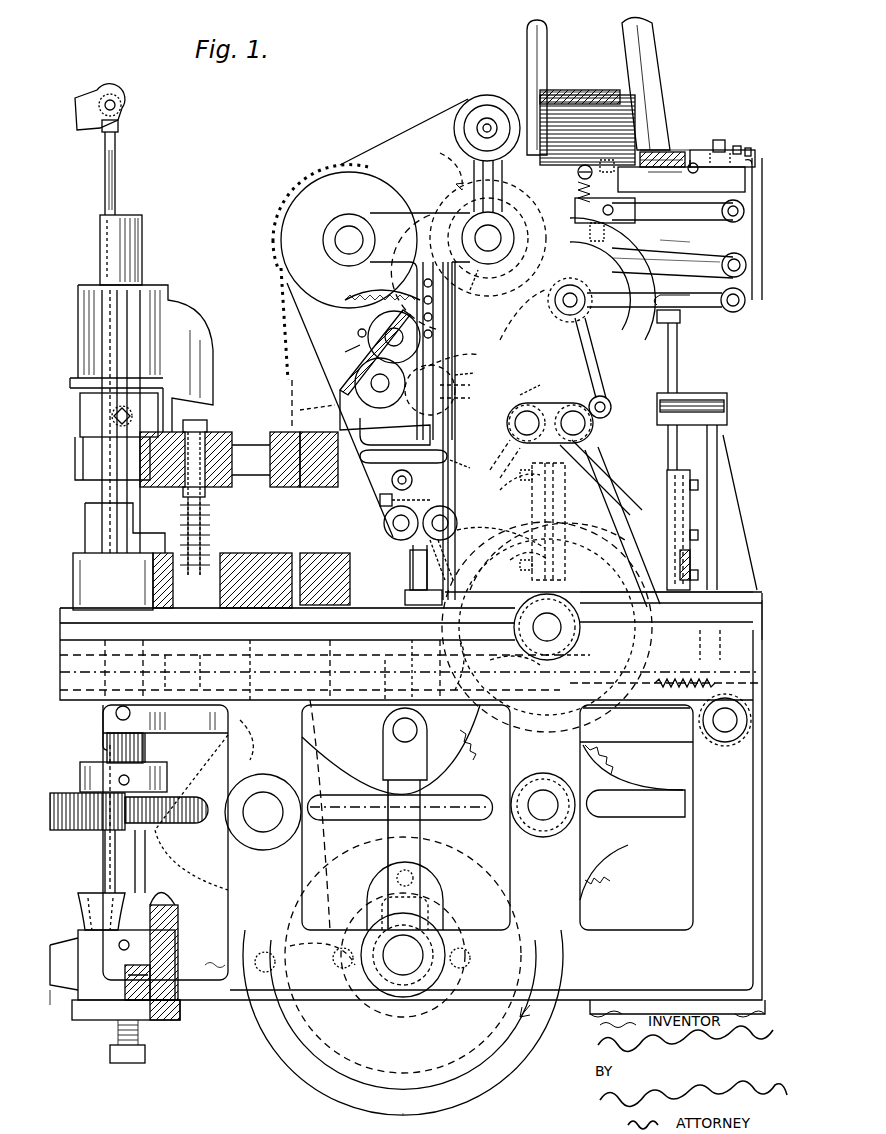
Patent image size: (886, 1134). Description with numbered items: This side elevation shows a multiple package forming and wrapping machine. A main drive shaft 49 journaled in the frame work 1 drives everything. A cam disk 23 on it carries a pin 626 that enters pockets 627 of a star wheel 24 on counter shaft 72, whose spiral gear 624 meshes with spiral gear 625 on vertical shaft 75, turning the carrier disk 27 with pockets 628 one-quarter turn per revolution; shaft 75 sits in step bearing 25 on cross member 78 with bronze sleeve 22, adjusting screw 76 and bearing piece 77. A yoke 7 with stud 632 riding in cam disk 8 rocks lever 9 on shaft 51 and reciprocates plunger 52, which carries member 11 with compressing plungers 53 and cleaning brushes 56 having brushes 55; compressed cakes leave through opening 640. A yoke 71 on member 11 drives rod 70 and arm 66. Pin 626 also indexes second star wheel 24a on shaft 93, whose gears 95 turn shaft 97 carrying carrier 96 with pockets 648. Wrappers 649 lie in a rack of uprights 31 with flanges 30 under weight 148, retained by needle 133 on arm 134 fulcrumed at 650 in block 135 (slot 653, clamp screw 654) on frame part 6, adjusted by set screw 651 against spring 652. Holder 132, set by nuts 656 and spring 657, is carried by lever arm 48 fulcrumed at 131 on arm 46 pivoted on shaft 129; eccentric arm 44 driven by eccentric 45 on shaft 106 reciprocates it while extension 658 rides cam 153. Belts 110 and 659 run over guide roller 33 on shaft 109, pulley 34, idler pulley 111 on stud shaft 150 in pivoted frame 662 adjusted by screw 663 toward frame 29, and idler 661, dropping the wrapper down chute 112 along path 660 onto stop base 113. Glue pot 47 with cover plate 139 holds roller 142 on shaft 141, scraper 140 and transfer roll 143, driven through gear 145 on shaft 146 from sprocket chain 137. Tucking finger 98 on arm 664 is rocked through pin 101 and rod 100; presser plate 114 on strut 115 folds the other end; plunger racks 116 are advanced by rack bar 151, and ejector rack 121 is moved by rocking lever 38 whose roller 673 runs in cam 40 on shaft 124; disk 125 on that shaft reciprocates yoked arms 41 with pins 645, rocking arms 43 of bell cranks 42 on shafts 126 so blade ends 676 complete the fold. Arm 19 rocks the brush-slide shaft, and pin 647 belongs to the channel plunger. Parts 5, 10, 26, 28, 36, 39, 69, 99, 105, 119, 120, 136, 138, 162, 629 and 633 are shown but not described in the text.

The frame 1 is at (740, 838).
The top rail 5 is at (765, 607).
The bracket 6 is at (762, 177).
The pawl stem 7 is at (422, 772).
The wheel 8 is at (320, 1090).
The bracket 9 is at (190, 735).
The bracket 10 is at (168, 290).
The housing 11 is at (80, 468).
The base 19 is at (137, 1001).
The funnel 22 is at (172, 895).
The wheel 23 is at (258, 1025).
The gear segment 24 is at (317, 817).
The gear segment 24a is at (632, 845).
The bearing block 25 is at (180, 920).
The slide 26 is at (169, 672).
The block 27 is at (301, 568).
The slide 28 is at (211, 672).
The lever 29 is at (748, 215).
The plate 30 is at (548, 60).
The blade 31 is at (655, 65).
The pulley 33 is at (490, 96).
The sprocket wheel 34 is at (332, 176).
The lever 36 is at (660, 490).
The rod 38 is at (680, 360).
The frame part 39 is at (723, 647).
The arc 40 is at (650, 345).
The rod 41 is at (625, 378).
The lever 42 is at (615, 470).
The pivot 43 is at (612, 400).
The pivot 44 is at (748, 262).
The arc 45 is at (502, 315).
The lever 46 is at (735, 240).
The bracket 47 is at (338, 395).
The lever 48 is at (672, 254).
The hub 49 is at (403, 955).
The boss 51 is at (722, 725).
The cylinder 52 is at (143, 232).
The nut 53 is at (212, 500).
The brush 55 is at (212, 525).
The bolt 56 is at (207, 425).
The cam bracket 66 is at (125, 105).
The rod 69 is at (125, 173).
The rod 70 is at (116, 185).
The block 71 is at (100, 410).
The boss 72 is at (263, 812).
The shaft 75 is at (115, 862).
The nut 76 is at (146, 1055).
The bushing 77 is at (142, 982).
The base plate 78 is at (185, 1012).
The boss 93 is at (543, 805).
The gear 95 is at (567, 656).
The rod 96 is at (665, 684).
The boss 97 is at (547, 627).
The rod 98 is at (430, 670).
The link 99 is at (587, 651).
The slide bar 100 is at (397, 670).
The link 101 is at (515, 665).
The cam 105 is at (470, 950).
The pulley 106 is at (340, 242).
The shaft 109 is at (484, 127).
The belt 110 is at (405, 135).
The post 111 is at (380, 518).
The nut 112 is at (408, 572).
The slide 113 is at (395, 670).
The post 114 is at (470, 580).
The link 115 is at (504, 459).
The slide 116 is at (545, 495).
The link 119 is at (529, 558).
The bar 120 is at (690, 515).
The spring 121 is at (686, 670).
The gear 124 is at (581, 309).
The gear 125 is at (600, 300).
The link 126 is at (550, 423).
The pivot 129 is at (748, 302).
The pivot 131 is at (745, 207).
The block 132 is at (616, 170).
The plate 133 is at (662, 172).
The plate 134 is at (668, 140).
The bracket 135 is at (757, 158).
The link 136 is at (482, 377).
The chain 137 is at (283, 330).
The bar 138 is at (455, 420).
The pin 139 is at (360, 338).
The link 140 is at (458, 363).
The roller 141 is at (387, 359).
The link 142 is at (433, 423).
The bracket 143 is at (372, 315).
The link 145 is at (473, 387).
The link 146 is at (472, 399).
The plate 148 is at (580, 80).
The pulley 150 is at (388, 528).
The block 151 is at (690, 560).
The arm 153 is at (435, 228).
The gear 162 is at (478, 290).
The block 624 is at (182, 772).
The worm 625 is at (70, 790).
The pin 626 is at (362, 960).
The slot 627 is at (308, 779).
The block 628 is at (262, 620).
The rod 629 is at (319, 815).
The boss 632 is at (397, 876).
The screw 633 is at (576, 183).
The slide 640 is at (279, 670).
The link 645 is at (538, 394).
The rail 647 is at (355, 614).
The boss 648 is at (543, 794).
The block 649 is at (590, 130).
The pin 650 is at (692, 162).
The screw 651 is at (750, 148).
The plate 652 is at (657, 150).
The screw 653 is at (738, 146).
The screw 654 is at (723, 134).
The block 656 is at (622, 232).
The gear 657 is at (492, 238).
The arc 658 is at (433, 164).
The gear 659 is at (500, 352).
The rail 660 is at (405, 629).
The link 661 is at (478, 555).
The roller 662 is at (392, 482).
The link 663 is at (380, 500).
The link 664 is at (474, 665).
The bracket 673 is at (695, 322).
The gear arc 676 is at (547, 556).